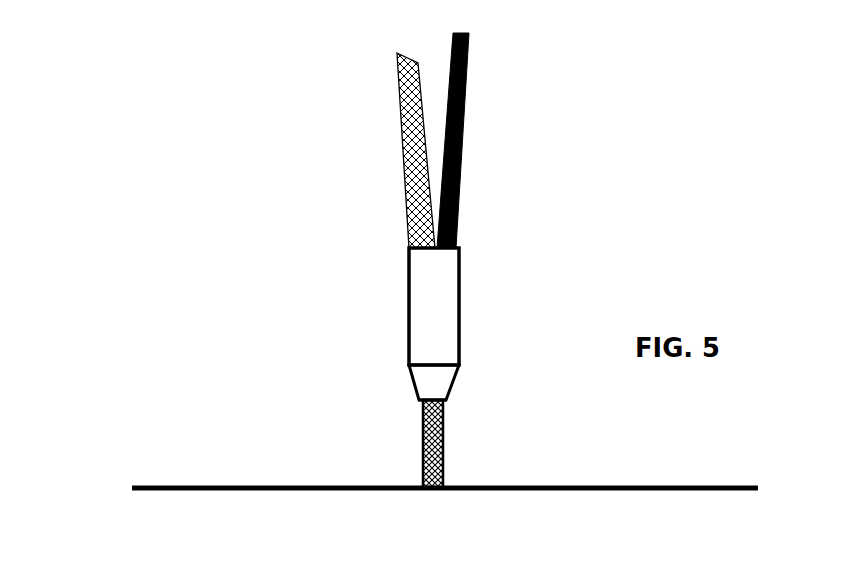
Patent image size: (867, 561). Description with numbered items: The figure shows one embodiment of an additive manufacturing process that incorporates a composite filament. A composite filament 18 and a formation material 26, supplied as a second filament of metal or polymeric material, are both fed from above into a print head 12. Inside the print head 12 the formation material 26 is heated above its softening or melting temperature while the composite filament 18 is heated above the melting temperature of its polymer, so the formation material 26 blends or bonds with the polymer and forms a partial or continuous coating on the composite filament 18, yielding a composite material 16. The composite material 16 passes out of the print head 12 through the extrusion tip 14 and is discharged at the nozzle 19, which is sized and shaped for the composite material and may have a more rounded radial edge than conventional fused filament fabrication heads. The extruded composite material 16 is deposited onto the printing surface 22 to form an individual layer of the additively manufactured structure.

The print head 12 is at (460, 318).
The extrusion tip 14 is at (450, 400).
The composite material 16 is at (422, 452).
The composite filament 18 is at (407, 162).
The nozzle 19 is at (417, 386).
The printing surface 22 is at (259, 486).
The formation material 26 is at (458, 162).